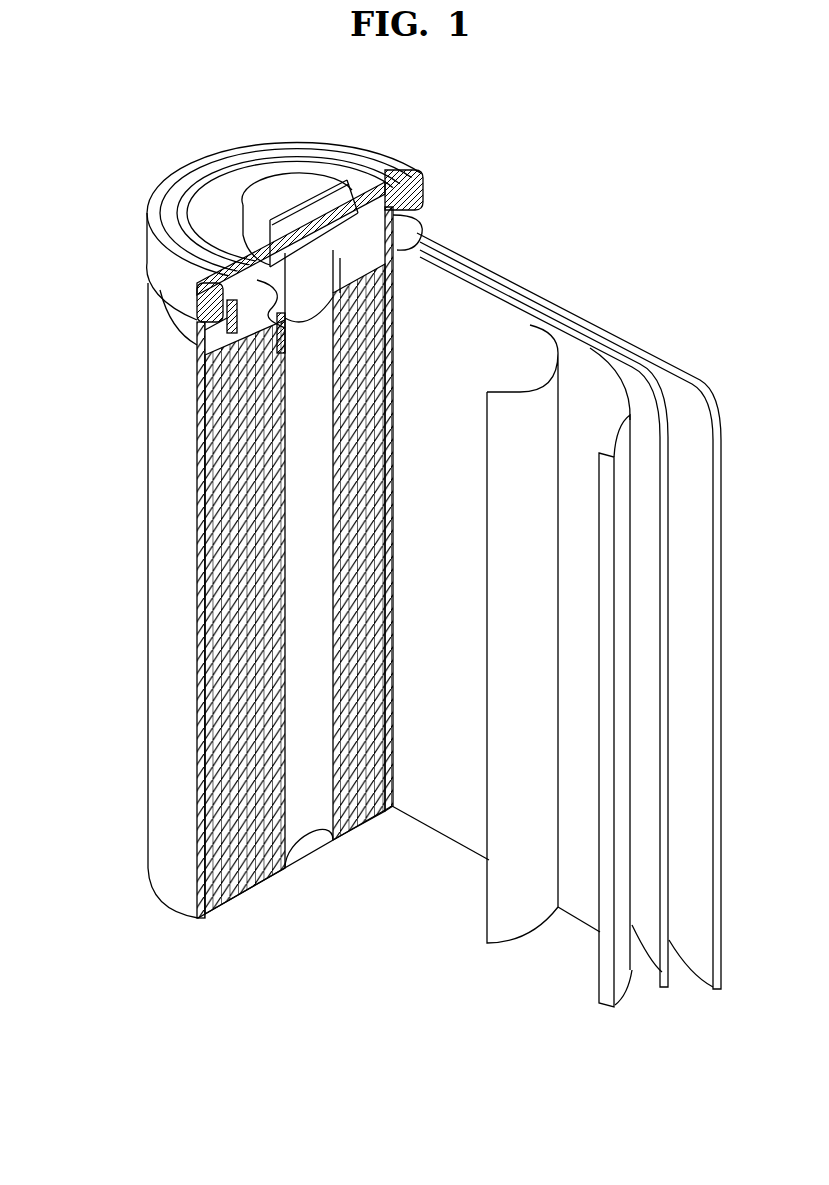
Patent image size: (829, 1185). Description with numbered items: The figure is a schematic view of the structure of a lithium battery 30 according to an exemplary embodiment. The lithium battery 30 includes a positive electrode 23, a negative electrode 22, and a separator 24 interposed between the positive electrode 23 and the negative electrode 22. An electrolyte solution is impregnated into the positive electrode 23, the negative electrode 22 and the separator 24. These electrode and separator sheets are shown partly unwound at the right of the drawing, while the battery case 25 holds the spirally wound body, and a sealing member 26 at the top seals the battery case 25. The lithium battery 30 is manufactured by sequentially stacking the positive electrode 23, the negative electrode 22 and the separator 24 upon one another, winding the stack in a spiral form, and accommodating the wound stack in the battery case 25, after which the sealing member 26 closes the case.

The lithium battery 30 is at (372, 82).
The negative electrode 22 is at (694, 403).
The positive electrode 23 is at (616, 402).
The separator 24 is at (526, 393).
The battery case 25 is at (156, 576).
The sealing member 26 is at (278, 187).